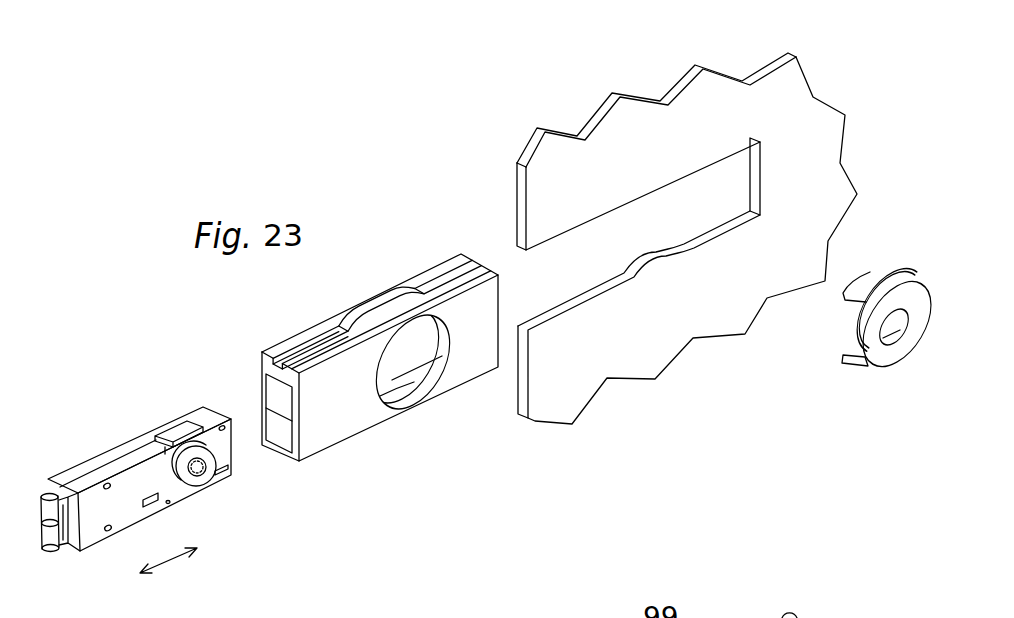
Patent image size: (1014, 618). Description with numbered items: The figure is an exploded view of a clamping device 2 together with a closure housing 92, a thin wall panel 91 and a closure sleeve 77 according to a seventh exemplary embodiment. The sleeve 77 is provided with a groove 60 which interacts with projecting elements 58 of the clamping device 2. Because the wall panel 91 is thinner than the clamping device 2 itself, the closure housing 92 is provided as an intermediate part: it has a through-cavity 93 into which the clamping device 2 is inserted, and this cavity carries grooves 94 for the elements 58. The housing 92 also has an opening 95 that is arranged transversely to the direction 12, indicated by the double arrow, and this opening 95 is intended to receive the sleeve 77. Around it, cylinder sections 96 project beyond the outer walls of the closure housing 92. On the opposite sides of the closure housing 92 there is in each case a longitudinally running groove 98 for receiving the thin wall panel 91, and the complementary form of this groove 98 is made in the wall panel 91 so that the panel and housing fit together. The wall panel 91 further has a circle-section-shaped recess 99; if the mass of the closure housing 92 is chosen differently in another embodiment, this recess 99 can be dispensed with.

The clamping device 2 is at (126, 448).
The direction 12 is at (167, 562).
The projecting elements 58 is at (181, 424).
The groove 60 is at (887, 230).
The closure sleeve 77 is at (885, 362).
The thin wall panel 91 is at (553, 163).
The closure housing 92 is at (333, 427).
The through-cavity 93 is at (268, 418).
The grooves 94 is at (264, 386).
The opening 95 is at (436, 360).
The cylinder sections 96 is at (383, 292).
The groove 98 is at (457, 264).
The circle-section-shaped recess 99 is at (675, 175).